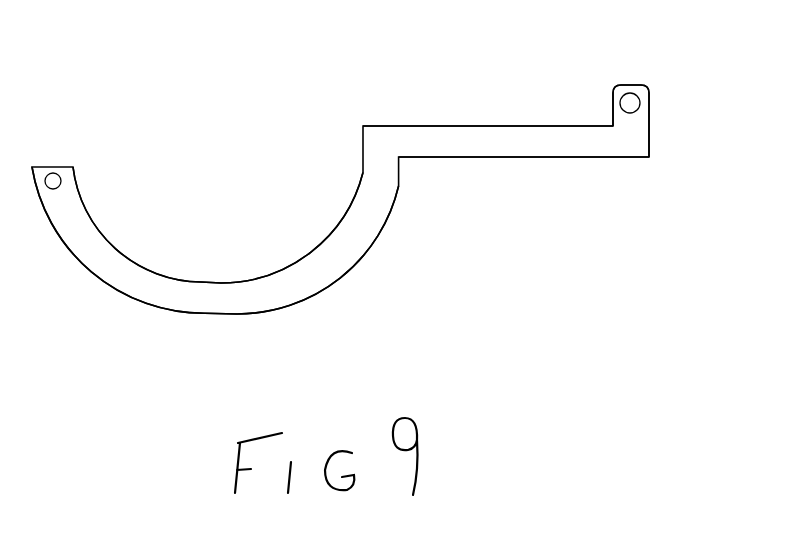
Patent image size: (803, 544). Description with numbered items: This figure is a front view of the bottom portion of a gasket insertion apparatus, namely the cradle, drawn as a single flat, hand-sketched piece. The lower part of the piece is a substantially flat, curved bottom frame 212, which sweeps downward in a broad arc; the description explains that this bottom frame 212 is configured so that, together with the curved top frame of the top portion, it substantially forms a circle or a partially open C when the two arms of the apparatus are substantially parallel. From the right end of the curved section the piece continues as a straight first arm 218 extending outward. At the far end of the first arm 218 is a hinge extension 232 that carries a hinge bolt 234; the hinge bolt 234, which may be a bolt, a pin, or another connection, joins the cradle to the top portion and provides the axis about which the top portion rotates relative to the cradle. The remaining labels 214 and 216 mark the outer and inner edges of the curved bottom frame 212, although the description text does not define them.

The bottom frame 212 is at (322, 270).
The outer edge 214 is at (127, 295).
The inner edge 216 is at (177, 278).
The first arm 218 is at (533, 143).
The hinge extension 232 is at (636, 134).
The hinge bolt 234 is at (636, 97).